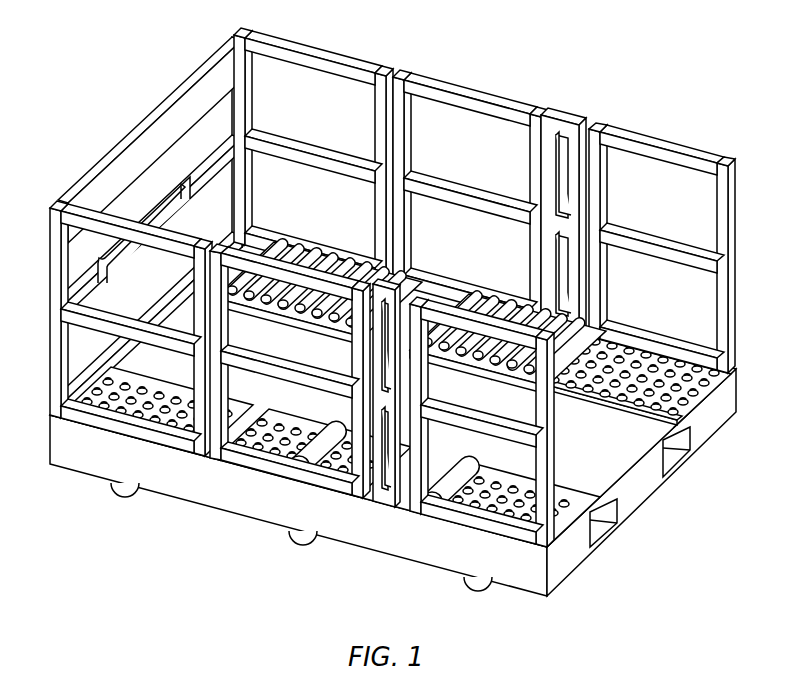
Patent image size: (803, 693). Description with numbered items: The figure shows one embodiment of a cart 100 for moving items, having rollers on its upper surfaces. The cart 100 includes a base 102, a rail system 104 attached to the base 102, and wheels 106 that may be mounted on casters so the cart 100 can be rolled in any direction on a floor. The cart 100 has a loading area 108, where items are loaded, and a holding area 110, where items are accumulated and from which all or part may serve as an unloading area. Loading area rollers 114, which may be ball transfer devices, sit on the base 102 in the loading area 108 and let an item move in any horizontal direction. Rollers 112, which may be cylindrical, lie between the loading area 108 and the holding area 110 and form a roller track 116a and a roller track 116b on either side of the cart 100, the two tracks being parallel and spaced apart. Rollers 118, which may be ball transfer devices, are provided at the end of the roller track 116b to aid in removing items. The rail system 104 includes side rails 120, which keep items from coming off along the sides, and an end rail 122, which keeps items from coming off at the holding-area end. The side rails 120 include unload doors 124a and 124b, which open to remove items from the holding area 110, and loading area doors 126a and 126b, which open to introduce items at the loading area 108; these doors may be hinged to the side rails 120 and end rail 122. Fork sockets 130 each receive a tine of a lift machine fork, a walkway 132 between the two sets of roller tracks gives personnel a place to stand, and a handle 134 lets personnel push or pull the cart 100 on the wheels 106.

The cart 100 is at (602, 57).
The base 102 is at (641, 497).
The rail system 104 is at (484, 195).
The wheels 106 is at (130, 485).
The loading area 108 is at (664, 341).
The holding area 110 is at (297, 251).
The rollers 112 is at (492, 311).
The loading area rollers 114 is at (628, 351).
The roller track 116a is at (508, 320).
The roller track 116b is at (303, 479).
The rollers 118 is at (122, 426).
The side rails 120 is at (557, 130).
The end rail 122 is at (185, 86).
The unload door 124a is at (334, 39).
The unload door 124b is at (60, 208).
The loading area door 126a is at (662, 244).
The loading area door 126b is at (553, 413).
The fork sockets 130 is at (675, 460).
The walkway 132 is at (612, 470).
The handle 134 is at (181, 167).